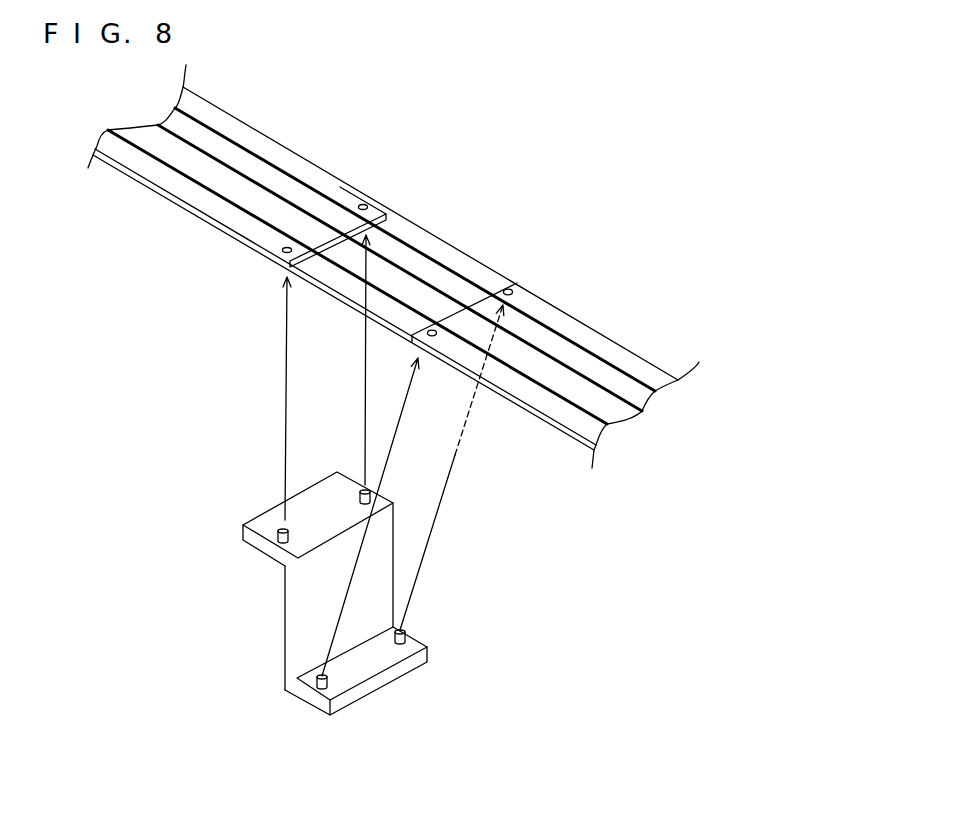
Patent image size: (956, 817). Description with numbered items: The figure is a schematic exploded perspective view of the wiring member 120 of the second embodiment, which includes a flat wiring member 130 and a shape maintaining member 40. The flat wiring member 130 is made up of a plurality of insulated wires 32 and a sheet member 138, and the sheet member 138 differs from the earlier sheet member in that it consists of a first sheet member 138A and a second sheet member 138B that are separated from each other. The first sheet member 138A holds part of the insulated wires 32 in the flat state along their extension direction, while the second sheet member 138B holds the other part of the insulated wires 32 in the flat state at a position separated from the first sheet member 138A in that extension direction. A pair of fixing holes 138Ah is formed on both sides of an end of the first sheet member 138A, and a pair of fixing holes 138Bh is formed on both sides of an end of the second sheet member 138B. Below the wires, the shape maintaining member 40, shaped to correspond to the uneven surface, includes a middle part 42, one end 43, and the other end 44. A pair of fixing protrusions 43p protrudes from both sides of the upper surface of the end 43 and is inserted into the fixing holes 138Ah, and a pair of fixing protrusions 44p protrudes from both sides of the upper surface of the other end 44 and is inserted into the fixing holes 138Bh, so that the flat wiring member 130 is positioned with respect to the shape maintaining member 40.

The wiring member 120 is at (532, 544).
The flat wiring member 130 is at (288, 132).
The insulated wires 32 is at (594, 422).
The sheet member 138 is at (542, 170).
The first sheet member 138A is at (376, 214).
The second sheet member 138B is at (456, 311).
The fixing holes 138Ah is at (366, 203).
The fixing holes 138Bh is at (513, 293).
The shape maintaining member 40 is at (232, 511).
The middle part 42 is at (285, 634).
The one end 43 is at (243, 534).
The fixing protrusions 43p is at (360, 488).
The other end 44 is at (312, 716).
The fixing protrusions 44p is at (407, 632).